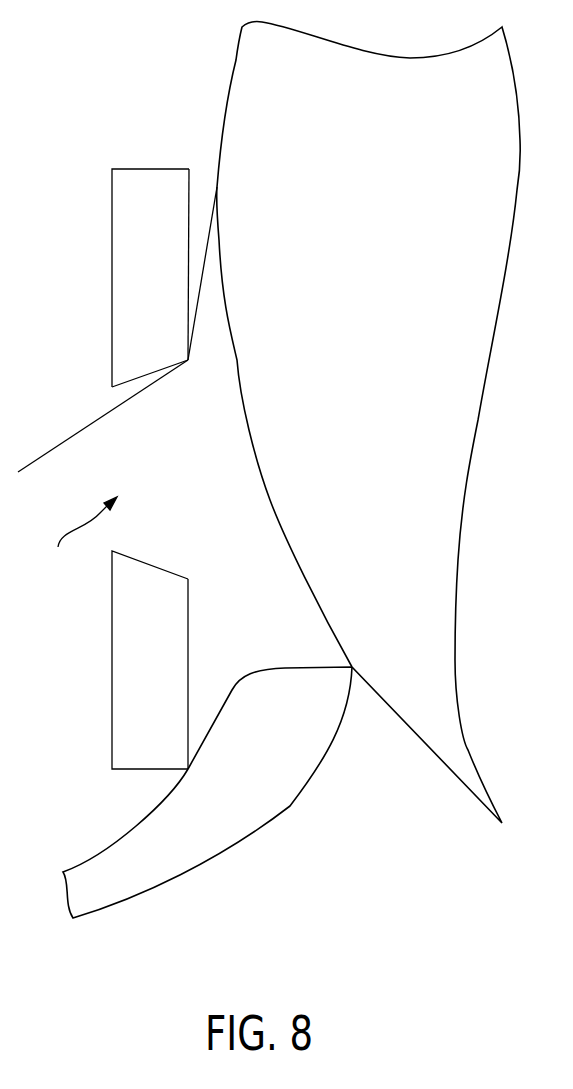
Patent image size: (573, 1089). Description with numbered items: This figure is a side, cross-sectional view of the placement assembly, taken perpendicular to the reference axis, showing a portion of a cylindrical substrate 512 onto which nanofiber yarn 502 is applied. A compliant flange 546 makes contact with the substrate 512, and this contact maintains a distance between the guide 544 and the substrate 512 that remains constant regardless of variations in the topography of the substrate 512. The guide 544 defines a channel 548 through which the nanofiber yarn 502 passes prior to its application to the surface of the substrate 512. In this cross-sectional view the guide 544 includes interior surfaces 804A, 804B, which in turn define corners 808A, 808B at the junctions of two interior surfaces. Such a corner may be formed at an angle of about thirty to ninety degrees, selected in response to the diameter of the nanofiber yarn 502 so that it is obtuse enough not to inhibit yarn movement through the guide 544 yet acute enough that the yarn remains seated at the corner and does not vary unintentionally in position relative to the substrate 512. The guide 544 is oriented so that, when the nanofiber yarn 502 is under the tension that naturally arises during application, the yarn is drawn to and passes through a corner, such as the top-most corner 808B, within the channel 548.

The substrate 512 is at (370, 391).
The guide 544 is at (150, 169).
The interior surface 804B is at (128, 380).
The corner 808B is at (190, 362).
The nanofiber yarn 502 is at (43, 457).
The channel 548 is at (81, 539).
The interior surface 804A is at (160, 571).
The corner 808A is at (190, 578).
The compliant flange 546 is at (297, 783).